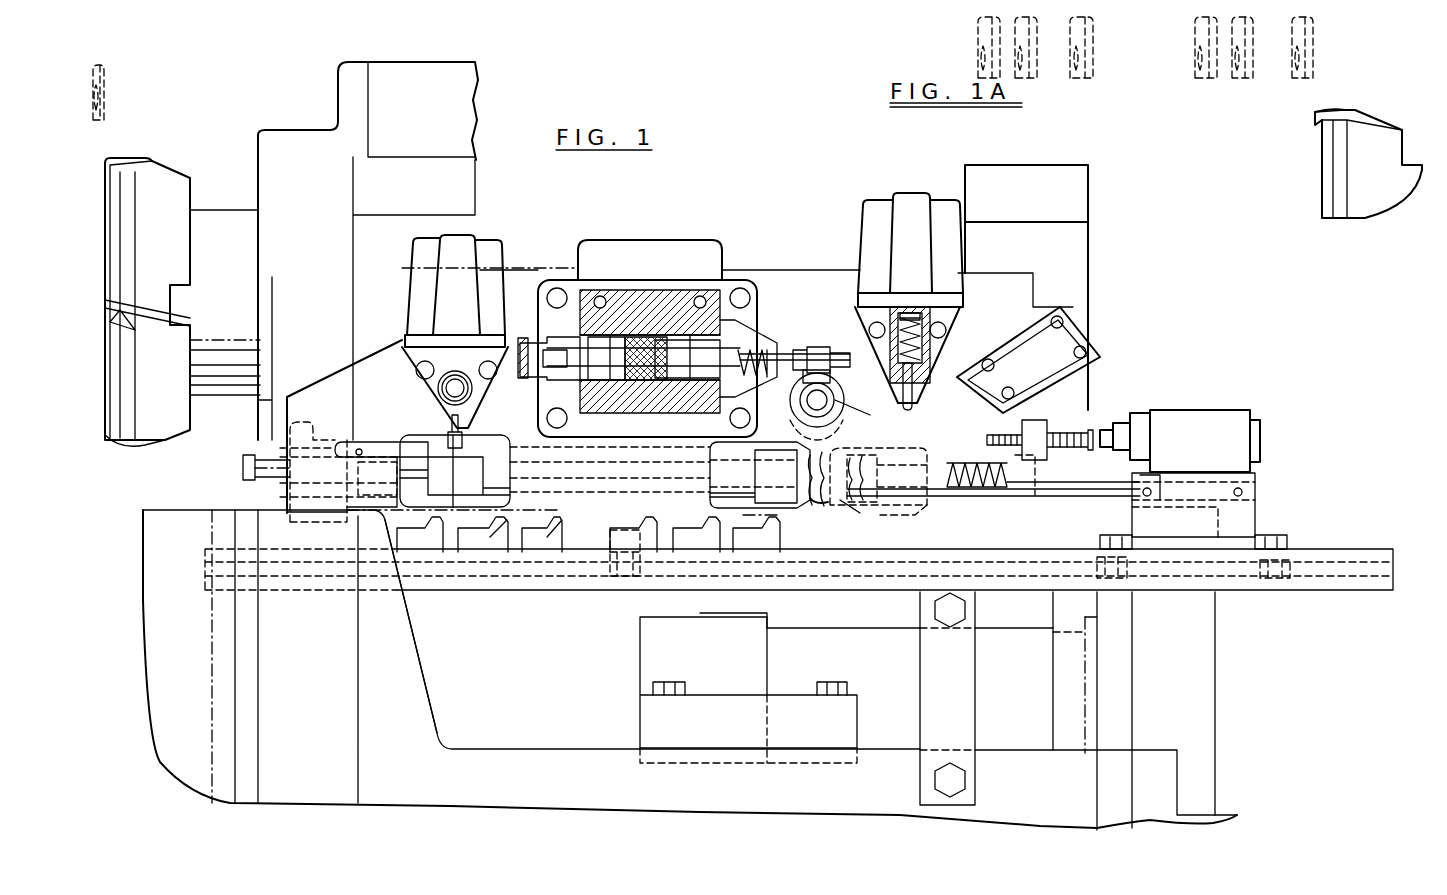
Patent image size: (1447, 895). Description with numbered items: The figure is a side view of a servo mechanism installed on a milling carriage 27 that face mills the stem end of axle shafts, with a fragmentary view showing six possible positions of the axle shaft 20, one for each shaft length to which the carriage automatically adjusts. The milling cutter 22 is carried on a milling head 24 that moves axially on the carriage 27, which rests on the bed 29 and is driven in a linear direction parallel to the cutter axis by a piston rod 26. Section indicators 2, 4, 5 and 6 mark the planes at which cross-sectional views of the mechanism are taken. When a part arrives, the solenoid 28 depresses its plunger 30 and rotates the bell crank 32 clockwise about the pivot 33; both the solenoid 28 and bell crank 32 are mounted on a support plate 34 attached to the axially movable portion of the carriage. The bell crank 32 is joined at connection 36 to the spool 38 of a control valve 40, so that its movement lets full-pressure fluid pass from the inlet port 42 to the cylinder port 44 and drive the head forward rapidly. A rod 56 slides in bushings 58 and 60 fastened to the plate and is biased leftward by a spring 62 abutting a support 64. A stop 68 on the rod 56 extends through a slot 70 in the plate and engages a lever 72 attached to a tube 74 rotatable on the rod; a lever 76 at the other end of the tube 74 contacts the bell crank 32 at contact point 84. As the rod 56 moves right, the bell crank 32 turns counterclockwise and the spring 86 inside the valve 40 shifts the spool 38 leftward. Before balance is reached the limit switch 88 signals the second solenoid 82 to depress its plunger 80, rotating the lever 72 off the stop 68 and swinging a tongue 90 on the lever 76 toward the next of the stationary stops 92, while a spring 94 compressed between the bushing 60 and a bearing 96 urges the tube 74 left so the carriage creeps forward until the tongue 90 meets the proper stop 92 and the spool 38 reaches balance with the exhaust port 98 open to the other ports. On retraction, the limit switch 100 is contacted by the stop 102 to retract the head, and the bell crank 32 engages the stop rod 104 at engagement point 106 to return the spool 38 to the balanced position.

In FIG. 1, the section line 2- 2 is at (848, 400).
In FIG. 1, the section line 4- 4 is at (273, 433).
In FIG. 1, the section line 5- 5 is at (455, 415).
In FIG. 1, the section line 6- 6 is at (747, 560).
In FIG. 1, the axle shaft 20 is at (106, 96).
In FIG. 1A, the axle shaft 20 is at (1214, 83).
In FIG. 1, the milling cutter 22 is at (180, 186).
In FIG. 1A, the milling cutter 22 is at (1364, 142).
In FIG. 1, the milling head 24 is at (352, 70).
In FIG. 1, the piston rod 26 is at (893, 692).
In FIG. 1, the milling carriage 27 is at (542, 262).
In FIG. 1, the solenoid 28 is at (958, 318).
In FIG. 1, the bed 29 is at (452, 698).
In FIG. 1, the plunger 30 is at (922, 358).
In FIG. 1, the bell crank 32 is at (840, 420).
In FIG. 1, the pivot 33 is at (820, 400).
In FIG. 1, the support plate 34 is at (1023, 300).
In FIG. 1, the connection 36 is at (830, 372).
In FIG. 1, the spool 38 is at (665, 357).
In FIG. 1, the control valve 40 is at (688, 330).
In FIG. 1, the inlet port 42 is at (683, 330).
In FIG. 1, the cylinder port 44 is at (650, 343).
In FIG. 1, the rod 56 is at (255, 465).
In FIG. 1, the bushing 58 is at (292, 498).
In FIG. 1, the bushing 60 is at (930, 516).
In FIG. 1, the spring 62 is at (990, 463).
In FIG. 1, the support 64 is at (1035, 464).
In FIG. 1, the stop 68 is at (385, 442).
In FIG. 1, the slot 70 is at (363, 442).
In FIG. 1, the lever 72 is at (470, 465).
In FIG. 1, the tube 74 is at (583, 445).
In FIG. 1, the lever 76 is at (793, 437).
In FIG. 1, the plunger 80 is at (447, 435).
In FIG. 1, the second solenoid 82 is at (420, 372).
In FIG. 1, the contact point 84 is at (775, 478).
In FIG. 1, the spring 86 is at (760, 347).
In FIG. 1, the limit switch 88 is at (1072, 340).
In FIG. 1, the tongue 90 is at (763, 500).
In FIG. 1, the stops 92 is at (672, 530).
In FIG. 1, the spring 94 is at (862, 514).
In FIG. 1, the bearing 96 is at (778, 455).
In FIG. 1, the exhaust port 98 is at (617, 340).
In FIG. 1, the limit switch 100 is at (1225, 415).
In FIG. 1, the stop 102 is at (1070, 432).
In FIG. 1, the stop rod 104 is at (1070, 497).
In FIG. 1, the engagement point 106 is at (828, 502).